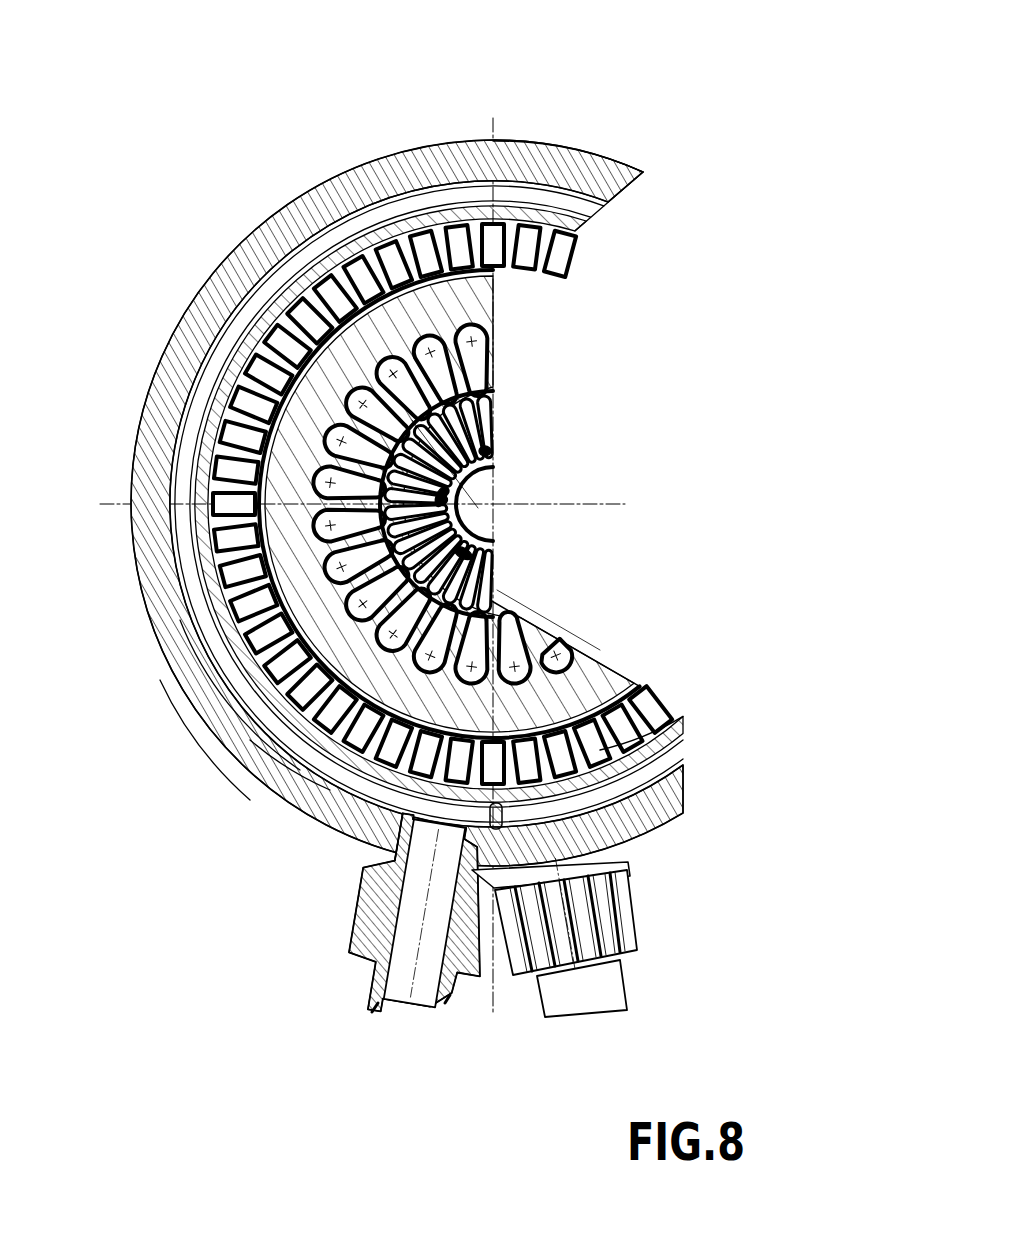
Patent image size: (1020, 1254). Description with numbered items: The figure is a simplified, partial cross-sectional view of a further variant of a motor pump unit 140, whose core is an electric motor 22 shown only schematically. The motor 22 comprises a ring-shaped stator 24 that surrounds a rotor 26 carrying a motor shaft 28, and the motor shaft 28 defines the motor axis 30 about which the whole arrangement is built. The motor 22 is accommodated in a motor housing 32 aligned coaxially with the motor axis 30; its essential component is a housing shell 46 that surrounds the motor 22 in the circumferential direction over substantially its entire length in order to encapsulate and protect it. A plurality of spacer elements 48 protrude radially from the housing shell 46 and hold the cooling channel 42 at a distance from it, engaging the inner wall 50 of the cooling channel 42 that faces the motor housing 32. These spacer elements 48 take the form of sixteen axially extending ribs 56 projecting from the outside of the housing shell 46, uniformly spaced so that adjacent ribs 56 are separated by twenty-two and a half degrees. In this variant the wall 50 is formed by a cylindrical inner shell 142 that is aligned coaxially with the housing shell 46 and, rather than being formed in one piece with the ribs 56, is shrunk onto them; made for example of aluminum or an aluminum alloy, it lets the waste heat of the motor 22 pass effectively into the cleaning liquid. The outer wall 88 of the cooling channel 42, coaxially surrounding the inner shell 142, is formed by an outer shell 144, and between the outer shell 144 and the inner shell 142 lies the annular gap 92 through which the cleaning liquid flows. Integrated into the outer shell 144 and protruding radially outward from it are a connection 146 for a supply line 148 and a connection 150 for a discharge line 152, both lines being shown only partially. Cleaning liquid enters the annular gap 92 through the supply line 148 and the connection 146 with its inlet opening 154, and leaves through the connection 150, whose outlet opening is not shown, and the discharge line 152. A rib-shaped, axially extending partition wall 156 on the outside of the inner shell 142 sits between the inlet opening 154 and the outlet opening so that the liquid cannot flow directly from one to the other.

The motor 22 is at (604, 673).
The stator 24 is at (445, 303).
The rotor 26 is at (476, 502).
The motor shaft 28 is at (500, 478).
The motor axis 30 is at (498, 504).
The motor housing 32 is at (625, 722).
The cooling channel 42 is at (305, 775).
The housing shell 46 is at (650, 745).
The spacer elements 48 is at (205, 673).
The inner wall 50 is at (140, 556).
The ribs 56 is at (305, 228).
The wall 88 is at (600, 152).
The annular gap 92 is at (232, 733).
The motor pump unit 140 is at (545, 118).
The inner shell 142 is at (165, 613).
The outer shell 144 is at (640, 170).
The connection 146 is at (362, 902).
The supply line 148 is at (375, 1013).
The connection 150 is at (620, 862).
The discharge line 152 is at (605, 1002).
The inlet opening 154 is at (388, 858).
The partition wall 156 is at (495, 895).